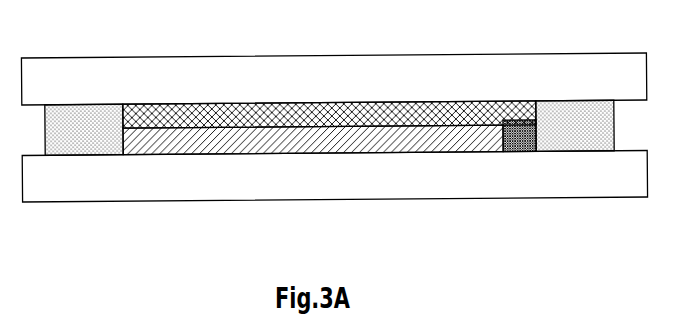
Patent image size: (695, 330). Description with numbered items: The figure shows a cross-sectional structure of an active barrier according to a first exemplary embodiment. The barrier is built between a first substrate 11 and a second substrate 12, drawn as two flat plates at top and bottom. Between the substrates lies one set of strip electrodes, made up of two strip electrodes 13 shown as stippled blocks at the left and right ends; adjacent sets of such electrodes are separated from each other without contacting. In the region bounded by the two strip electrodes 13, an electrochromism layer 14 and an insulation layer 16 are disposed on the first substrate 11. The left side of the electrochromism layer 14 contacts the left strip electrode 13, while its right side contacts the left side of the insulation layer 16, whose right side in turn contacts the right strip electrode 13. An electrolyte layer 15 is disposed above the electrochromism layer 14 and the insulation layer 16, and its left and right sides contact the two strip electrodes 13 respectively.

The first substrate 11 is at (355, 67).
The second substrate 12 is at (325, 190).
The strip electrodes 13 is at (82, 143).
The electrochromism layer 14 is at (196, 143).
The electrolyte layer 15 is at (213, 112).
The insulation layer 16 is at (520, 143).